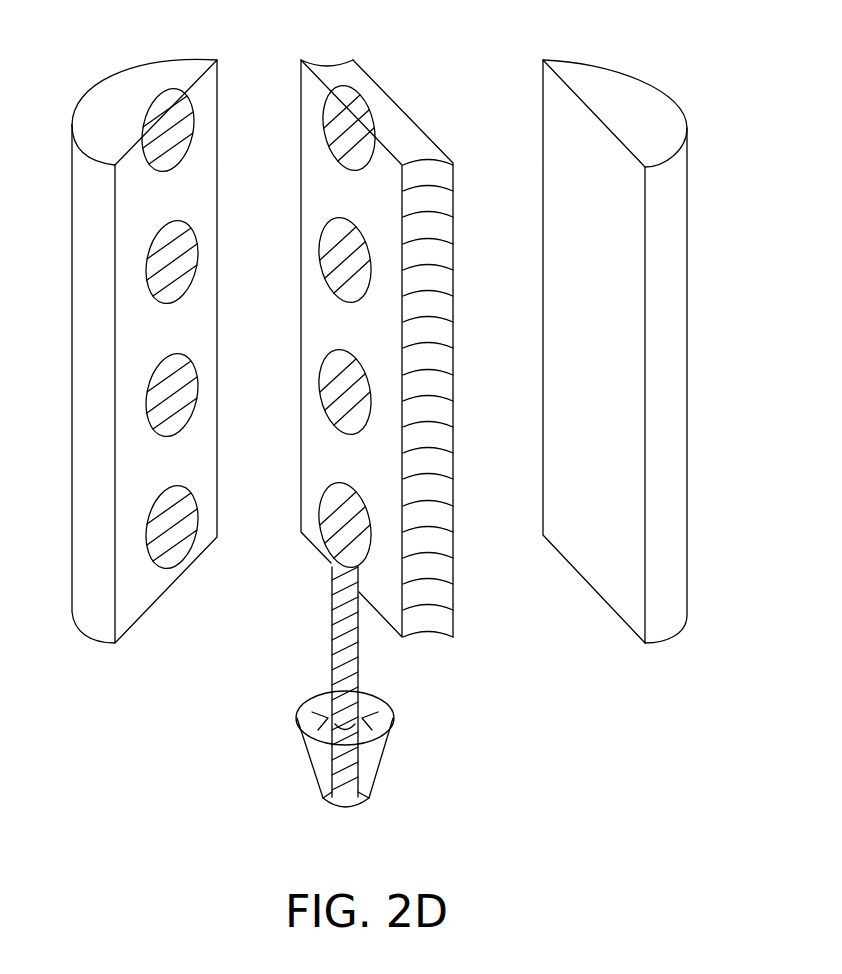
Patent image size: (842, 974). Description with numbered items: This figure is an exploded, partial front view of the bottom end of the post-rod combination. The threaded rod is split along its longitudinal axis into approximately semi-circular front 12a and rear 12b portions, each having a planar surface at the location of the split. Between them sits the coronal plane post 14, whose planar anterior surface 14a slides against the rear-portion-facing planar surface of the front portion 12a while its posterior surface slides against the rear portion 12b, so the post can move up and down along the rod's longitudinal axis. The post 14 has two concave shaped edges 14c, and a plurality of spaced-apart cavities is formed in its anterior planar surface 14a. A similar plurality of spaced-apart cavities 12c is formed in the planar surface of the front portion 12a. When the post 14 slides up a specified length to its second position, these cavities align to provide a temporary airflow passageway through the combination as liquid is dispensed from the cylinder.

The front portion 12a is at (88, 620).
The rear portion 12b is at (665, 597).
The spaced-apart cavities 12c is at (173, 557).
The coronal plane post 14 is at (400, 135).
The anterior planar surface 14a is at (312, 158).
The concave shaped edges 14c is at (332, 405).